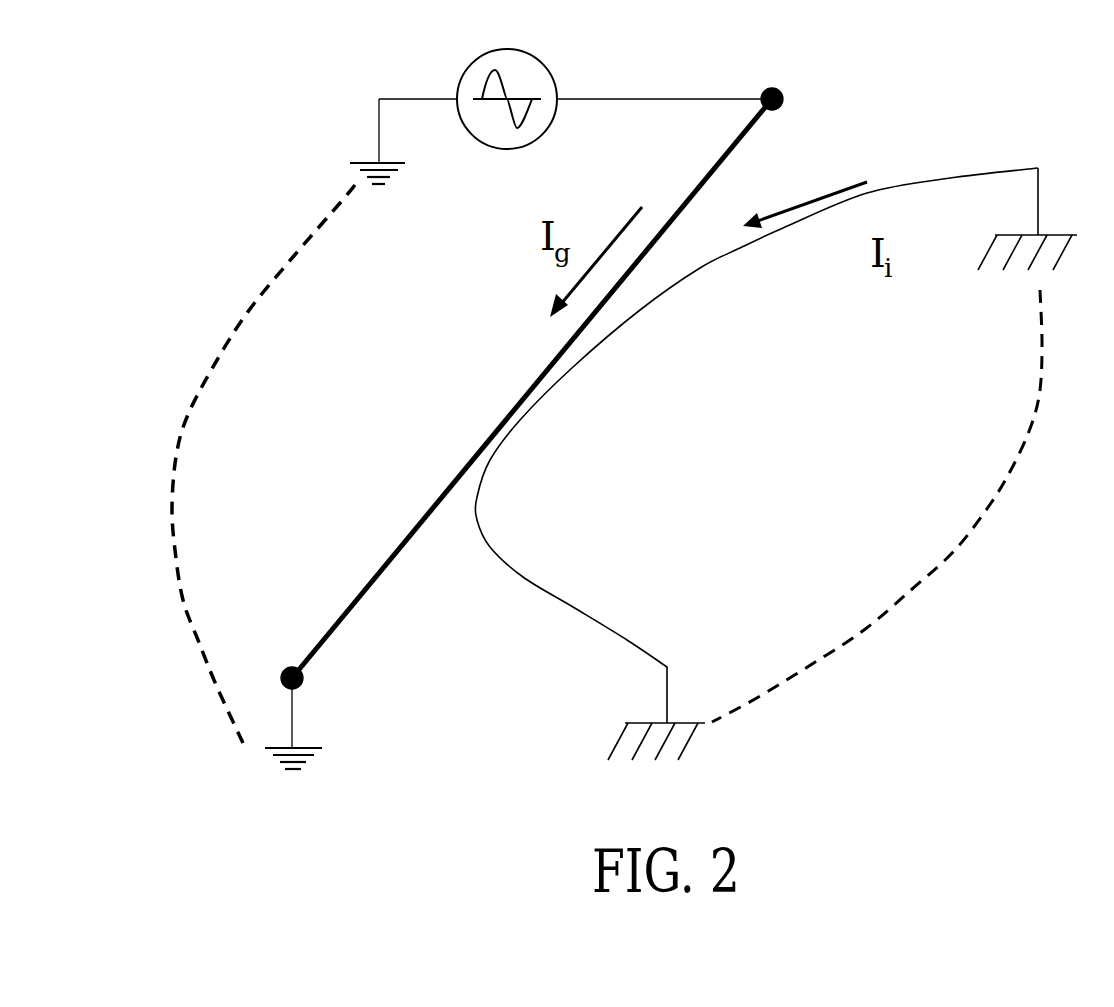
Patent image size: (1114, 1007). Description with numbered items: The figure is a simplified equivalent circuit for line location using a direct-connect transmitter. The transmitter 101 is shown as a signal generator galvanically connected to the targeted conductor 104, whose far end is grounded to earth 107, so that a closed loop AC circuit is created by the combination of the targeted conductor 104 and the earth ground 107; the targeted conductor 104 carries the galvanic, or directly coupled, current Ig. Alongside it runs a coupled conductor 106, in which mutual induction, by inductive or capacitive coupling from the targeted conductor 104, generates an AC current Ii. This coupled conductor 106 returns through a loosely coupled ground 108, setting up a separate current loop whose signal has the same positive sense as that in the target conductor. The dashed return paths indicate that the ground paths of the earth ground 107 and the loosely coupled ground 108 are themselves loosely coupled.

The direct-connect transmitter 101 is at (552, 61).
The targeted conductor 104 is at (395, 528).
The coupled conductor 106 is at (557, 582).
The earth ground 107 is at (163, 452).
The loosely coupled ground 108 is at (956, 557).